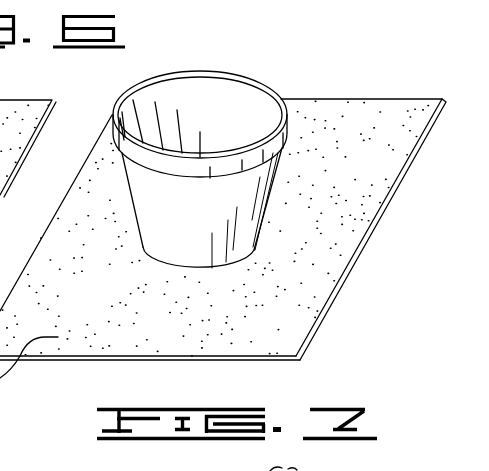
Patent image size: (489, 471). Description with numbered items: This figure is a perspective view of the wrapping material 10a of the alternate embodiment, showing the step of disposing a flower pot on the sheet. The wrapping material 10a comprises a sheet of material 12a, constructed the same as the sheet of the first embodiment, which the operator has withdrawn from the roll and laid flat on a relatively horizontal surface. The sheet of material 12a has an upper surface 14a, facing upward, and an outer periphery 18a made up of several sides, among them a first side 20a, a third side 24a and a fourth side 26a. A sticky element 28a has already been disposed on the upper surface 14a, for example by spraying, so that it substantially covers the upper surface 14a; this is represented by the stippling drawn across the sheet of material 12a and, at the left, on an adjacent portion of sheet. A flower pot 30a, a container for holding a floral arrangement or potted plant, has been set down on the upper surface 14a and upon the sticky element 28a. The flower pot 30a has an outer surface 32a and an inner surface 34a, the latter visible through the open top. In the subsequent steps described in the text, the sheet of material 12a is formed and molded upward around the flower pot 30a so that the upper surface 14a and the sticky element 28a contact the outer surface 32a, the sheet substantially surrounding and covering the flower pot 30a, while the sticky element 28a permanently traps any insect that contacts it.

The wrapping material 10a is at (267, 146).
The sheet of material 12a is at (223, 225).
The upper surface 14a is at (0, 204).
The outer periphery 18a is at (260, 361).
The first side 20a is at (328, 300).
The third side 24a is at (115, 361).
The fourth side 26a is at (293, 97).
The sticky element 28a is at (240, 293).
The flower pot 30a is at (243, 193).
The outer surface 32a is at (245, 230).
The inner surface 34a is at (202, 90).